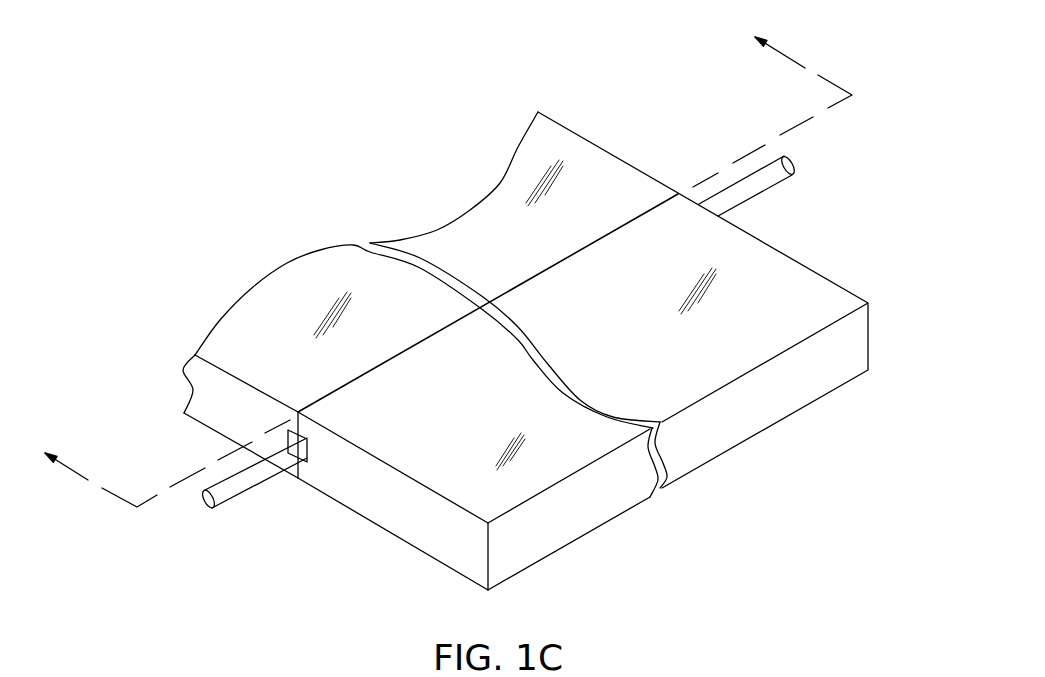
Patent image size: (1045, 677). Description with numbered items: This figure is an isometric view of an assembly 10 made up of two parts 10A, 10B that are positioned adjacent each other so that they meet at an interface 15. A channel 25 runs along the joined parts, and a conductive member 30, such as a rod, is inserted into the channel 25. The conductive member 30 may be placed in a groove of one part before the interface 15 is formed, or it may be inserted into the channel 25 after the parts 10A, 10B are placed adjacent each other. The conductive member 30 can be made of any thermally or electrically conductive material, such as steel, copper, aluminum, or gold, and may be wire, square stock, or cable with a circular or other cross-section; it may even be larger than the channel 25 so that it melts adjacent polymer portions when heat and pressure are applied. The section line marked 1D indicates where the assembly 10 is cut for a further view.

The assembly 10 is at (498, 100).
The part 10A is at (613, 180).
The part 10B is at (803, 292).
The interface 15 is at (667, 208).
The channel 25 is at (308, 452).
The conductive member 30 is at (203, 505).
The section line for FIG. 1D is at (448, 261).